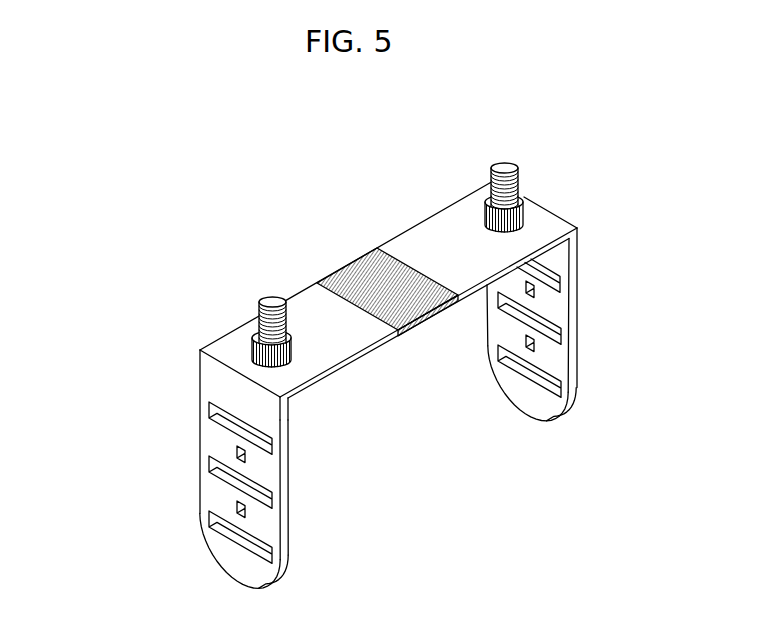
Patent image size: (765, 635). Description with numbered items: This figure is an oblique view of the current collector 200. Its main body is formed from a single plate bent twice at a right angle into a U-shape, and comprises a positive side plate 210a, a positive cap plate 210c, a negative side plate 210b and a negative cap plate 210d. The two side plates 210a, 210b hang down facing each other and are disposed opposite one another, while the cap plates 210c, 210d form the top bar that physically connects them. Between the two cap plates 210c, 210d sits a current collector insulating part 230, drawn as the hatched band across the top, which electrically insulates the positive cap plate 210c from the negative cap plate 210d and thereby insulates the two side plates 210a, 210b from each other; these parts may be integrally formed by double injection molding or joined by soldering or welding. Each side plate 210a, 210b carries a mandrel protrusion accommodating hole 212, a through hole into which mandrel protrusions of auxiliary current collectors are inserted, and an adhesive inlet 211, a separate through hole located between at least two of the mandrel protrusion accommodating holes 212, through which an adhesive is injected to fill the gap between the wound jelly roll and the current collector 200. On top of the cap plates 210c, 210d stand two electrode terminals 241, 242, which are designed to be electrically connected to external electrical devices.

The current collector 200 is at (125, 296).
The positive side plate 210a is at (285, 437).
The negative side plate 210b is at (578, 265).
The positive cap plate 210c is at (230, 345).
The negative cap plate 210d is at (433, 222).
The adhesive inlet 211 is at (254, 545).
The mandrel protrusion accommodating hole 212 is at (236, 503).
The current collector insulating part 230 is at (357, 273).
The electrode terminal 241 is at (270, 300).
The electrode terminal 242 is at (503, 167).